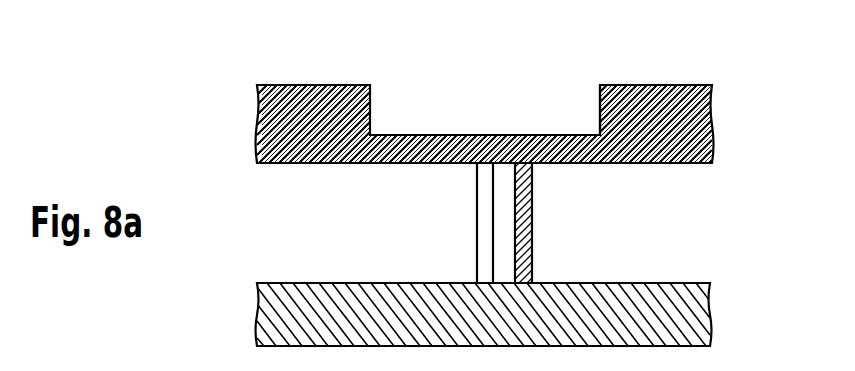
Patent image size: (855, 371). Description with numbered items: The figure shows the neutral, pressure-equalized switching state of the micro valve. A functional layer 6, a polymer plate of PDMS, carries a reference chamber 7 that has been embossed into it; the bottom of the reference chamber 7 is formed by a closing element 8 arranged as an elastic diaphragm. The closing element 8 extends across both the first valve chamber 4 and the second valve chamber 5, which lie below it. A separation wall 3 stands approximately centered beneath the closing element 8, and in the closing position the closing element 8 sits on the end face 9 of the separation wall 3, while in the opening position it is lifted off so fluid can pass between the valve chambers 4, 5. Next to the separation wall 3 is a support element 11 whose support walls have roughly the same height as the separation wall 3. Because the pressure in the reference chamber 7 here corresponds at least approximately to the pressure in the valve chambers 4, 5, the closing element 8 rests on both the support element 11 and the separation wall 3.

The separation wall 3 is at (524, 240).
The first valve chamber 4 is at (688, 197).
The second valve chamber 5 is at (282, 197).
The functional layer 6 is at (665, 120).
The reference chamber 7 is at (600, 118).
The closing element 8 is at (457, 150).
The end face 9 is at (520, 158).
The support element 11 is at (488, 240).